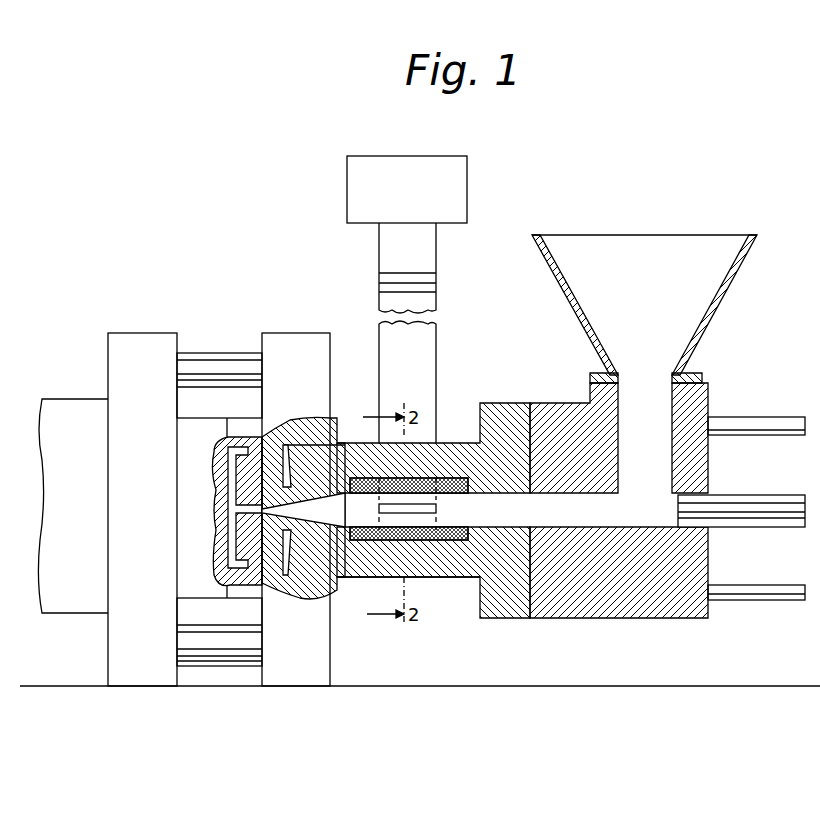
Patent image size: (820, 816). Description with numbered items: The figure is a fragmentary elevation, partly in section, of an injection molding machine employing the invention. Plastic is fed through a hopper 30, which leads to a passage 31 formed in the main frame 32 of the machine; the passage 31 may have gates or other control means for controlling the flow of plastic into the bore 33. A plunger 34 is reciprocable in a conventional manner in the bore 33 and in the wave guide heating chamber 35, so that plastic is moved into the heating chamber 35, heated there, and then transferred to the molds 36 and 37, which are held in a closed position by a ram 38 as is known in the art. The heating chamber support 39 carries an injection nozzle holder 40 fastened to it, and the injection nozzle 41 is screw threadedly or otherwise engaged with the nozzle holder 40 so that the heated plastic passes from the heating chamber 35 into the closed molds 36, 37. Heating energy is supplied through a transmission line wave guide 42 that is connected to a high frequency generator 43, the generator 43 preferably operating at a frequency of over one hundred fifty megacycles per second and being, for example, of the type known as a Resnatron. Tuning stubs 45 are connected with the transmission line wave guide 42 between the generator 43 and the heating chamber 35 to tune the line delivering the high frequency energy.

The hopper 30 is at (745, 258).
The passage 31 is at (703, 397).
The main frame 32 is at (567, 402).
The bore 33 is at (563, 523).
The plunger 34 is at (764, 495).
The wave guide heating chamber 35 is at (455, 486).
The mold 36 is at (195, 428).
The mold 37 is at (236, 428).
The ram 38 is at (73, 399).
The heating chamber support 39 is at (453, 578).
The injection nozzle holder 40 is at (323, 563).
The injection nozzle 41 is at (290, 573).
The transmission line wave guide 42 is at (436, 347).
The high frequency generator 43 is at (467, 178).
The tuning stubs 45 is at (436, 276).